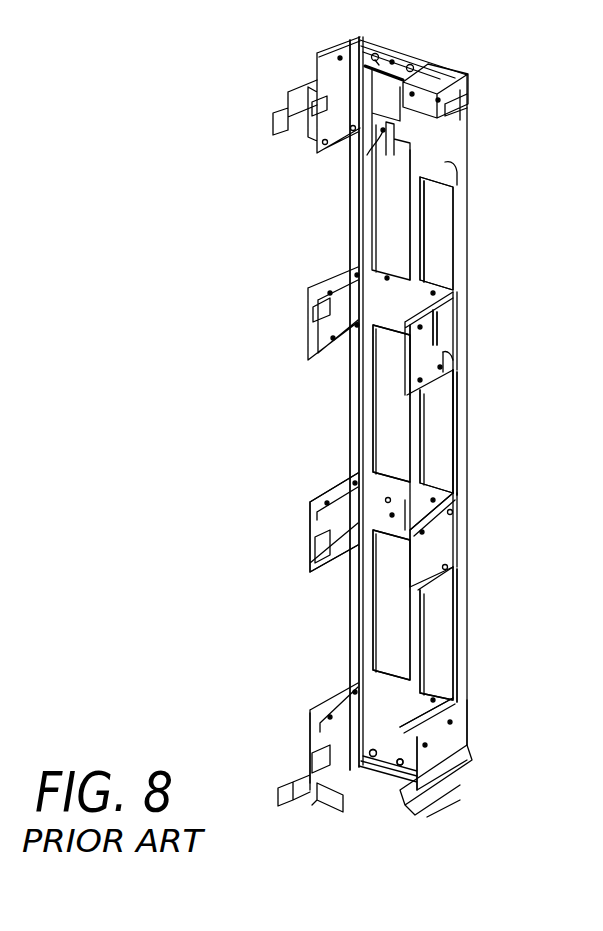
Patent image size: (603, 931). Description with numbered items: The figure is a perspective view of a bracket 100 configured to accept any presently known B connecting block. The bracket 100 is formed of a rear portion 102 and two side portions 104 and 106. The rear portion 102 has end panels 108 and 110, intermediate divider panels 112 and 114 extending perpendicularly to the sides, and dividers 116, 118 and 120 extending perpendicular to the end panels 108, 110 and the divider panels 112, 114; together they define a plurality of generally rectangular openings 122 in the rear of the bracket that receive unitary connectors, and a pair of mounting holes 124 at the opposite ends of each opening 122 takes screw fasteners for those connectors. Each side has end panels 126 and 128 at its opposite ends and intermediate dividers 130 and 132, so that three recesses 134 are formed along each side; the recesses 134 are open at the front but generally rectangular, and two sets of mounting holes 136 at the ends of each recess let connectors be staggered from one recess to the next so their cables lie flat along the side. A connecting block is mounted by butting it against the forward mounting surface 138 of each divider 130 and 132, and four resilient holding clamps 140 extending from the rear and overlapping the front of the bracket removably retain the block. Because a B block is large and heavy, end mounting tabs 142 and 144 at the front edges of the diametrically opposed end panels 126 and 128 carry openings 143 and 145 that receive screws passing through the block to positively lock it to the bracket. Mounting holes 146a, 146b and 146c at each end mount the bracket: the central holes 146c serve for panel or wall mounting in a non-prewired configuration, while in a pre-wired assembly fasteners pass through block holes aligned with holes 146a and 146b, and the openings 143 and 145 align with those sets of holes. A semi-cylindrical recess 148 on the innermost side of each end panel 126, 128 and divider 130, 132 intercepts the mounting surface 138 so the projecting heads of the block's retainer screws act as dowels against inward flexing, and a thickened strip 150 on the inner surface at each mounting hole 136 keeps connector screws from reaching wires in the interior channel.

The bracket 100 is at (244, 116).
The rear portion 102 is at (390, 343).
The side portion 104 is at (485, 568).
The side portion 106 is at (310, 492).
The end panel 108 is at (418, 64).
The end panel 110 is at (388, 770).
The intermediate divider panel 112 is at (387, 278).
The intermediate divider panel 114 is at (457, 471).
The divider 116 is at (448, 220).
The divider 118 is at (440, 443).
The divider 120 is at (438, 599).
The opening 122 is at (398, 398).
The mounting hole 124 is at (357, 168).
The end panel 126 is at (462, 728).
The end panel 128 is at (339, 60).
The intermediate divider 130 is at (457, 349).
The intermediate divider 132 is at (458, 533).
The recess 134 is at (452, 246).
The mounting hole 136 is at (448, 173).
The forward mounting surface 138 is at (306, 332).
The resilient holding clamp 140 is at (300, 82).
The end mounting tab 142 is at (452, 93).
The opening 143 is at (452, 110).
The end mounting tab 144 is at (331, 809).
The opening 145 is at (318, 812).
The mounting hole 146a is at (380, 58).
The mounting hole 146b is at (440, 69).
The central mounting hole 146c is at (420, 68).
The semi-cylindrical recess 148 is at (309, 552).
The thickened portion 150 is at (318, 281).